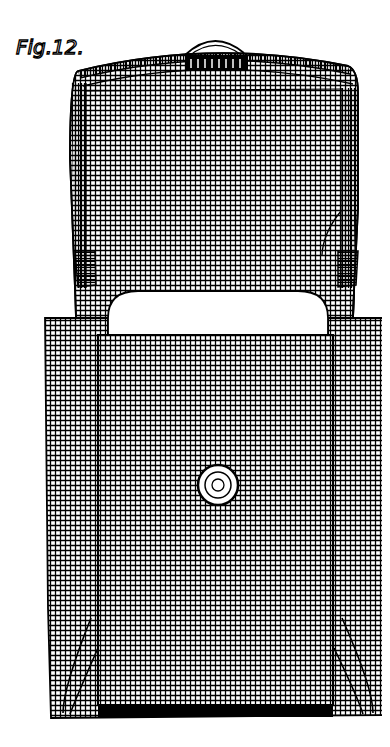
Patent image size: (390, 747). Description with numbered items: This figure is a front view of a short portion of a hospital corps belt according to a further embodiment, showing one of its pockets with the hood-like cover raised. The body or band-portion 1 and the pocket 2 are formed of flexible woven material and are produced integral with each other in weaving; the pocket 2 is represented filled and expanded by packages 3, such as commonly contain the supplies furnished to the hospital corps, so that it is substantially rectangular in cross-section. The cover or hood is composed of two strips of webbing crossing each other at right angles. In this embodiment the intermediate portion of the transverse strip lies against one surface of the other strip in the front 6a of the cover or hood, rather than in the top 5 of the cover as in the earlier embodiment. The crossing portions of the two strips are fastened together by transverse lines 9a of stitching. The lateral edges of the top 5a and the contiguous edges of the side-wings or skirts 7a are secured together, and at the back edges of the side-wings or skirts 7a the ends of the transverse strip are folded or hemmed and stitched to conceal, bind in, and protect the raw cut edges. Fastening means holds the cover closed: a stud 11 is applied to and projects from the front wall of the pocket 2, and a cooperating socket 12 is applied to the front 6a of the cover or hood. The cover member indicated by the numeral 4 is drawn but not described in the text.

The body or band-portion 1 is at (40, 437).
The pocket 2 is at (160, 305).
The packages 3 is at (218, 313).
The flap 4 is at (68, 297).
The top of the cover or hood 5 is at (367, 251).
The top of the cover or hood 5a is at (330, 153).
The front of the cover or hood 6a is at (153, 55).
The side-wings or skirts 7a is at (62, 168).
The transverse lines of stitching 9a is at (293, 67).
The stud 11 is at (230, 470).
The socket 12 is at (228, 33).